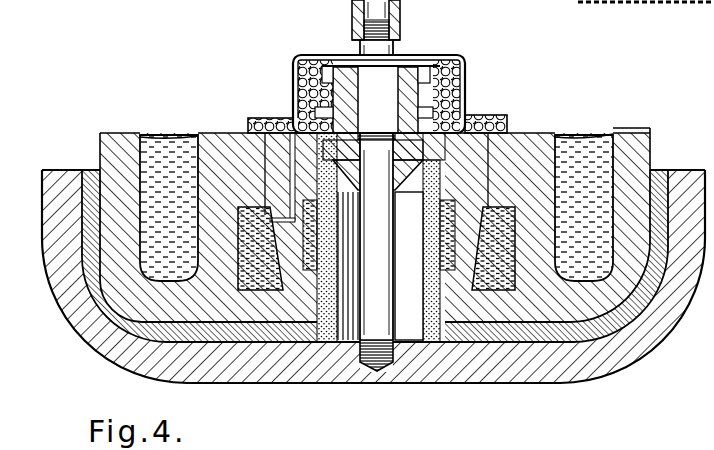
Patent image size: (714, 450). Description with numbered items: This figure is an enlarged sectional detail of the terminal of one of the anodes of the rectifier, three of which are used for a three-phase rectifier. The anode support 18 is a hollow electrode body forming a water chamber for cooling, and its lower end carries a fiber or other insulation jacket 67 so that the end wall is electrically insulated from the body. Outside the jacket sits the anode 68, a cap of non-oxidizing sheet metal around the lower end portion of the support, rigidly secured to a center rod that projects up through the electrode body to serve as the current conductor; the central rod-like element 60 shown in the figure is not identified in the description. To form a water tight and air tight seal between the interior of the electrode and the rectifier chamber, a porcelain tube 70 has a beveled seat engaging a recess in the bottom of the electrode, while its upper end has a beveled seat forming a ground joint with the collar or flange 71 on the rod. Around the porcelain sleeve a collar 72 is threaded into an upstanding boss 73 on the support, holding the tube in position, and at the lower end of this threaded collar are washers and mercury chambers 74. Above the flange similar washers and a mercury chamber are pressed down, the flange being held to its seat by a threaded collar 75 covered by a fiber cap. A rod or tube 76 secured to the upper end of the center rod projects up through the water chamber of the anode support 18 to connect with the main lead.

The anode support 18 is at (122, 144).
The shaft 60 is at (376, 206).
The insulation jacket 67 is at (89, 170).
The anode 68 is at (45, 281).
The porcelain tube 70 is at (434, 293).
The collar or flange 71 is at (378, 175).
The collar 72 is at (488, 121).
The upstanding boss 73 is at (248, 130).
The mercury chambers 74 is at (262, 280).
The threaded collar 75 is at (431, 57).
The rod or tube 76 is at (401, 8).